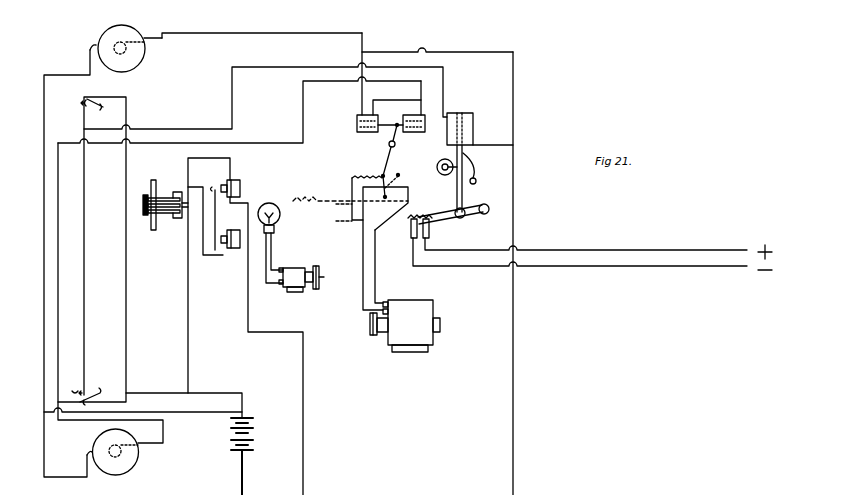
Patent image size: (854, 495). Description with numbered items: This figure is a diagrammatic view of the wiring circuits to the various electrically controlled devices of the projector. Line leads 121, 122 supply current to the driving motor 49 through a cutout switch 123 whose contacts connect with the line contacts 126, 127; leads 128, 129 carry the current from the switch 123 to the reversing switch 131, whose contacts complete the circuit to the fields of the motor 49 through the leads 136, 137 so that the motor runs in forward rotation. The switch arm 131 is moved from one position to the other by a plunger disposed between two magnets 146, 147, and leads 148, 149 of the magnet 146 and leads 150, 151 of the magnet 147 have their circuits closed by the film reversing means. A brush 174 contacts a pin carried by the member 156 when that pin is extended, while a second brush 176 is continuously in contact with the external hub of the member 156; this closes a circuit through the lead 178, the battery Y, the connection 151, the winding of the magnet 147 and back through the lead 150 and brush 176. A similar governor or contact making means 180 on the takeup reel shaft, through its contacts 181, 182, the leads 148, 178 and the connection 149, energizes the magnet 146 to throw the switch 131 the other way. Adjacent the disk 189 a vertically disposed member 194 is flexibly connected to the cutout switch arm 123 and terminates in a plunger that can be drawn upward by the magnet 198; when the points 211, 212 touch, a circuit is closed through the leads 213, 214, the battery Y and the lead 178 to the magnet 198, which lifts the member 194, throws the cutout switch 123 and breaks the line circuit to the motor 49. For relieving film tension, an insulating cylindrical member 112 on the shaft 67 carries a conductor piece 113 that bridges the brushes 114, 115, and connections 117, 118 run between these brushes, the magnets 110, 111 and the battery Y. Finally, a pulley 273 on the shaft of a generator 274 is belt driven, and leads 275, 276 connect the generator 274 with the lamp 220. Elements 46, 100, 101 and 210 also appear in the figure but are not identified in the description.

The conductor 46 is at (212, 2).
The motor 49 is at (418, 314).
The shaft 67 is at (152, 232).
The contact 100 is at (214, 233).
The contact 101 is at (211, 226).
The magnet 110 is at (240, 185).
The magnet 111 is at (235, 249).
The insulating cylindrical member 112 is at (143, 200).
The conductor piece 113 is at (147, 215).
The brush 114 is at (167, 198).
The brush 115 is at (170, 190).
The connection 117 is at (188, 165).
The connection 118 is at (188, 277).
The line lead 121 is at (638, 250).
The line lead 122 is at (690, 268).
The cutout switch 123 is at (443, 223).
The line contact 126 is at (383, 265).
The line contact 127 is at (412, 233).
The lead 128 is at (428, 215).
The lead 129 is at (335, 208).
The reversing switch 131 is at (387, 158).
The lead 136 is at (362, 213).
The lead 137 is at (410, 192).
The magnet 146 is at (411, 133).
The magnet 147 is at (358, 134).
The lead 148 is at (422, 97).
The lead 149 is at (420, 103).
The lead 150 is at (283, 23).
The lead 151 is at (361, 103).
The member 156 is at (108, 30).
The brush 174 is at (88, 50).
The brush 176 is at (148, 48).
The lead 178 is at (71, 75).
The governor or contact making means 180 is at (135, 468).
The contact 181 is at (87, 453).
The contact 182 is at (152, 447).
The disk 189 is at (468, 163).
The vertically disposed member 194 is at (466, 208).
The magnet 198 is at (475, 120).
The switch blade 210 is at (93, 108).
The point 211 is at (87, 103).
The point 212 is at (80, 103).
The lead 213 is at (280, 67).
The lead 214 is at (112, 97).
The lamp 220 is at (273, 197).
The pulley 273 is at (324, 277).
The generator 274 is at (294, 289).
The lead 275 is at (327, 198).
The lead 276 is at (274, 254).
The battery Y is at (254, 438).